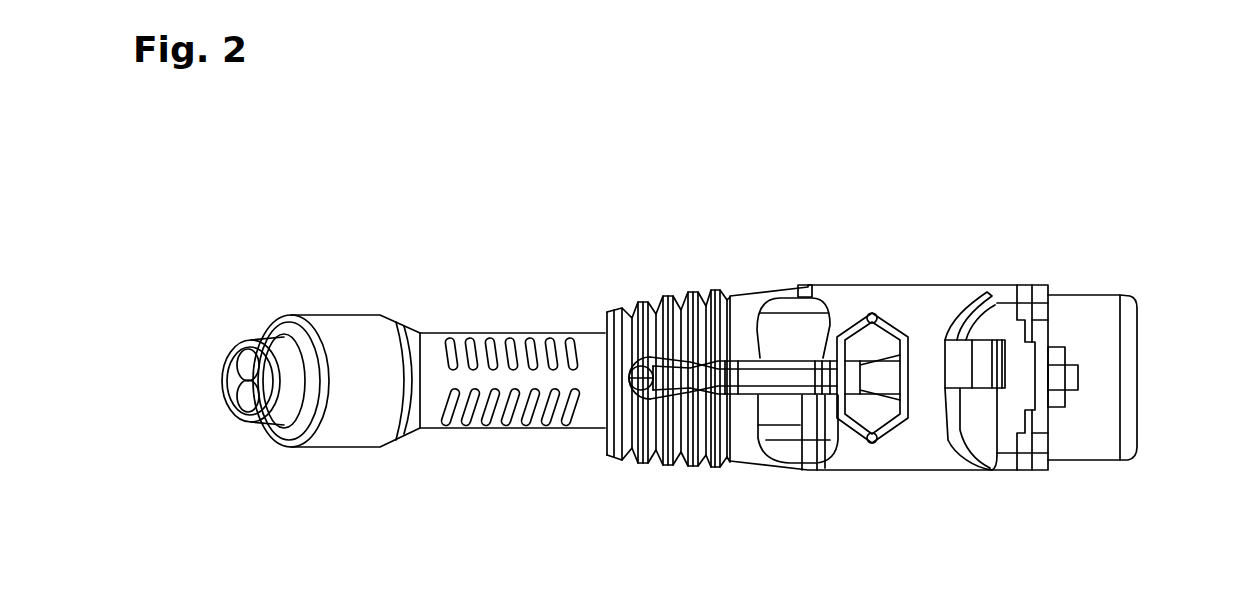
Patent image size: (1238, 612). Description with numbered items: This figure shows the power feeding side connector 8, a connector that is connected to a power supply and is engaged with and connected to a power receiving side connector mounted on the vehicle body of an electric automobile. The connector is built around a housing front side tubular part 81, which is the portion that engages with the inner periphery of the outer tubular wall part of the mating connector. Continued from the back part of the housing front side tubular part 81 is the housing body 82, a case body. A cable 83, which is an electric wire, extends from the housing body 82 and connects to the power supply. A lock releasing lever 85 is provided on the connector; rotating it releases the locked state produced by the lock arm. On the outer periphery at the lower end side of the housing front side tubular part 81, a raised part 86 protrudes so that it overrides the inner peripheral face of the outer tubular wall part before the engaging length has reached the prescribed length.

The power feeding side connector 8 is at (884, 286).
The housing front side tubular part 81 is at (1083, 308).
The housing body 82 is at (880, 458).
The cable 83 is at (582, 334).
The lock releasing lever 85 is at (753, 392).
The raised part 86 is at (1072, 378).